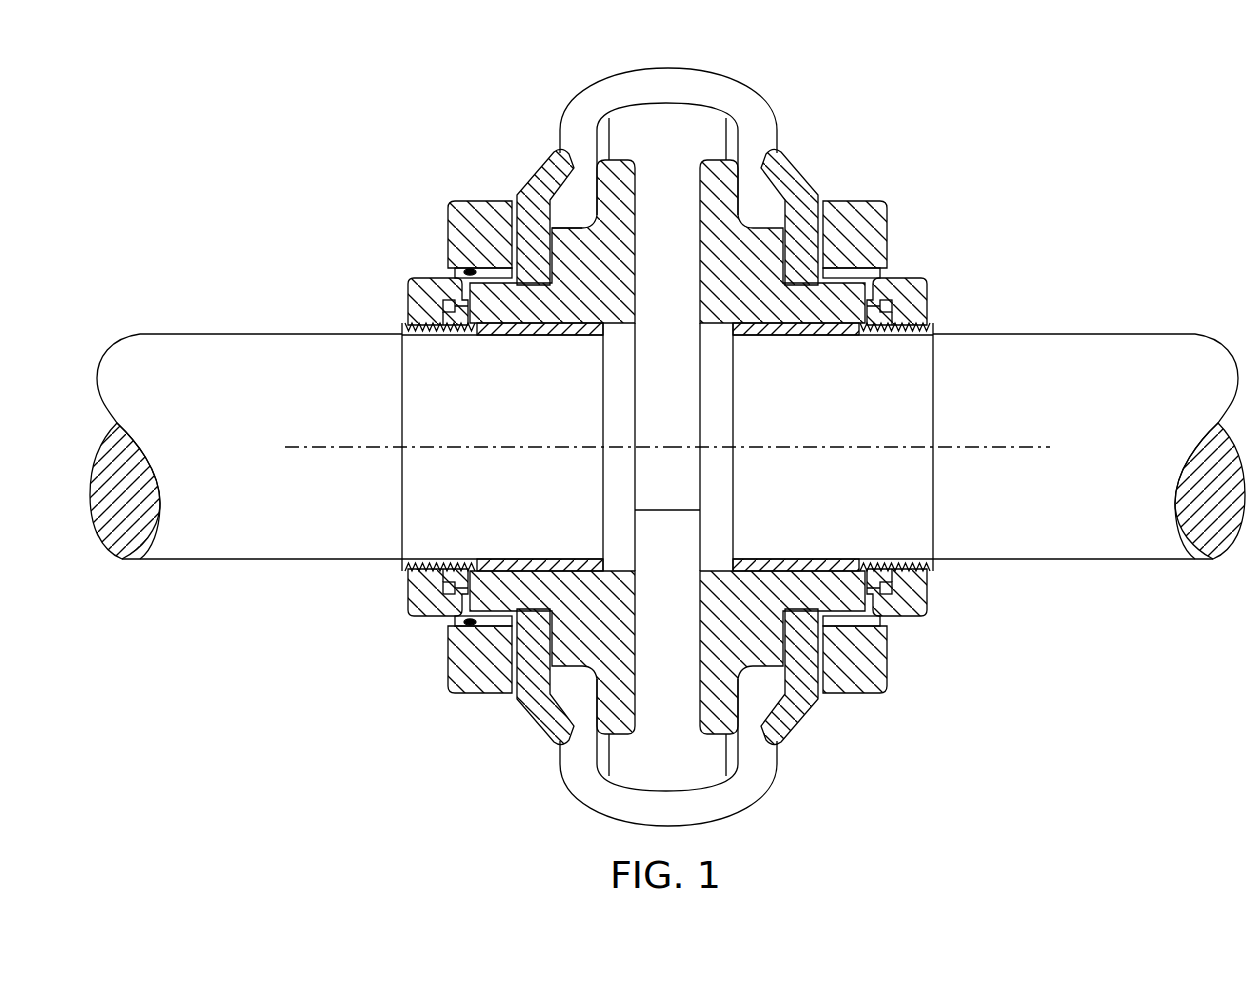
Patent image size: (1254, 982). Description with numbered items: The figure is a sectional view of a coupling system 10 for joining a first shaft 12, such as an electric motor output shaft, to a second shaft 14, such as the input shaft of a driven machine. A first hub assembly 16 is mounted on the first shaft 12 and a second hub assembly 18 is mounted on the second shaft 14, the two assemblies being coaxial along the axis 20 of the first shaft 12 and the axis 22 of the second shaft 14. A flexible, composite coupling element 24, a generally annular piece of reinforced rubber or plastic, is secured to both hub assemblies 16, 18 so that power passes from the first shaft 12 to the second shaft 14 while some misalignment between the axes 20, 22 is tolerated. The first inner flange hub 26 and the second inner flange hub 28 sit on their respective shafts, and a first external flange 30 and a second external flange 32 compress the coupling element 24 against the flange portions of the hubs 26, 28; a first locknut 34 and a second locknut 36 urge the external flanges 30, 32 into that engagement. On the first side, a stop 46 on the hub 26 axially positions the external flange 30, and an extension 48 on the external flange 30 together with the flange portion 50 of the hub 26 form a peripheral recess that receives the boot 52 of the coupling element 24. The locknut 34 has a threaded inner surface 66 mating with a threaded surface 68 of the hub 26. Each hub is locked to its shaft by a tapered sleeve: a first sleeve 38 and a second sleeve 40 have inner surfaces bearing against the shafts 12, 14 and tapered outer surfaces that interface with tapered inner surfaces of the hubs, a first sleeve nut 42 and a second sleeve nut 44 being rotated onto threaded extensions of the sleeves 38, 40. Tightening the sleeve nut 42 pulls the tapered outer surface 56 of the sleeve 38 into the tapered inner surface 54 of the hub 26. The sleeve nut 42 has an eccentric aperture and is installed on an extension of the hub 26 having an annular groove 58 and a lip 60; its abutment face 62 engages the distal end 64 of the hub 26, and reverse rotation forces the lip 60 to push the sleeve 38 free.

The coupling system 10 is at (1088, 134).
The first shaft 12 is at (257, 518).
The second shaft 14 is at (1120, 518).
The first hub assembly 16 is at (489, 724).
The second hub assembly 18 is at (839, 726).
The axis of first shaft 20 is at (338, 447).
The axis of second shaft 22 is at (998, 447).
The flexible composite coupling element 24 is at (705, 70).
The first inner flange hub 26 is at (610, 278).
The second inner flange hub 28 is at (700, 298).
The first external flange 30 is at (520, 195).
The second external flange 32 is at (802, 193).
The first locknut 34 is at (470, 212).
The second locknut 36 is at (874, 210).
The first sleeve 38 is at (405, 326).
The second sleeve 40 is at (937, 330).
The first sleeve nut 42 is at (410, 297).
The second sleeve nut 44 is at (905, 285).
The stop 46 is at (547, 253).
The extension 48 is at (541, 150).
The flange portion 50 is at (620, 176).
The boot 52 is at (582, 212).
The tapered inner surface 54 is at (565, 568).
The tapered outer surface 56 is at (520, 570).
The annular groove 58 is at (474, 567).
The lip 60 is at (450, 578).
The abutment face 62 is at (447, 568).
The distal end 64 is at (420, 582).
The threaded inner surface 66 is at (468, 270).
The threaded surface 68 is at (500, 280).